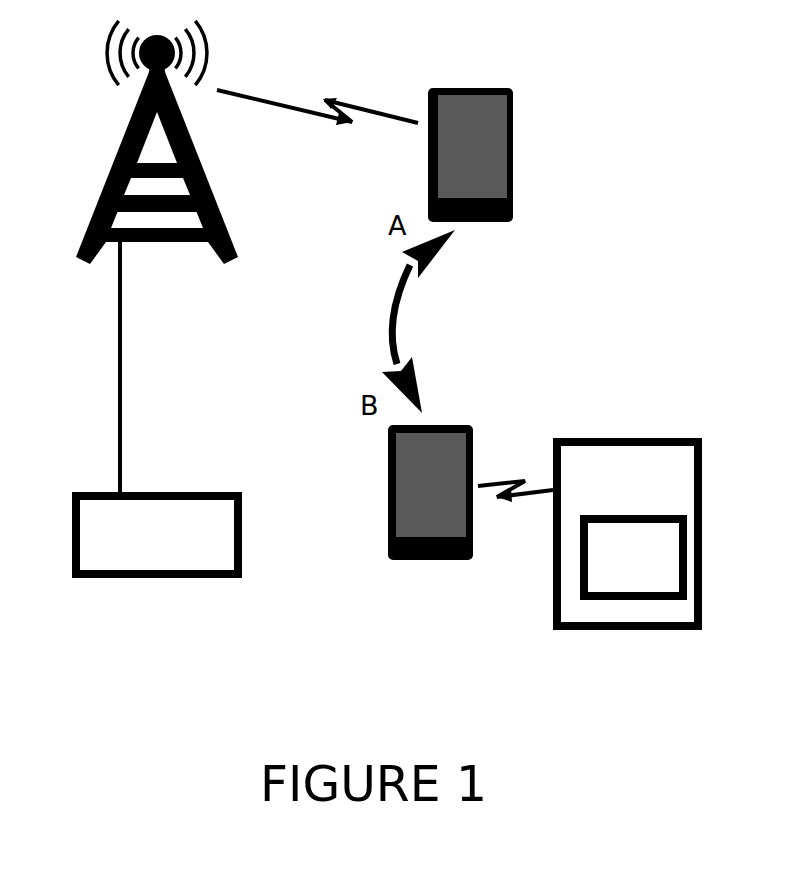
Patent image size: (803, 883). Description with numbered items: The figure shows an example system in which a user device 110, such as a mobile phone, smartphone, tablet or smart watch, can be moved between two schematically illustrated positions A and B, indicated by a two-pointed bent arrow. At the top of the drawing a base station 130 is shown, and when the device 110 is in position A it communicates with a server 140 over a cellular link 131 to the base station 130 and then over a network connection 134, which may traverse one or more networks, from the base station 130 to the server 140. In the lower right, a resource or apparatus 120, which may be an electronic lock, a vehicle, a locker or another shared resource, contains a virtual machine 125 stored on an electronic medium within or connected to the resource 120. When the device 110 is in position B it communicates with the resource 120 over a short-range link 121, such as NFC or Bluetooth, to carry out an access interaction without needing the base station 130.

The user device 110 is at (433, 562).
The resource or apparatus 120 is at (627, 534).
The link 121 is at (523, 481).
The virtual machine 125 is at (633, 557).
The base station 130 is at (116, 188).
The cellular link 131 is at (328, 100).
The network connection 134 is at (118, 398).
The server 140 is at (157, 535).